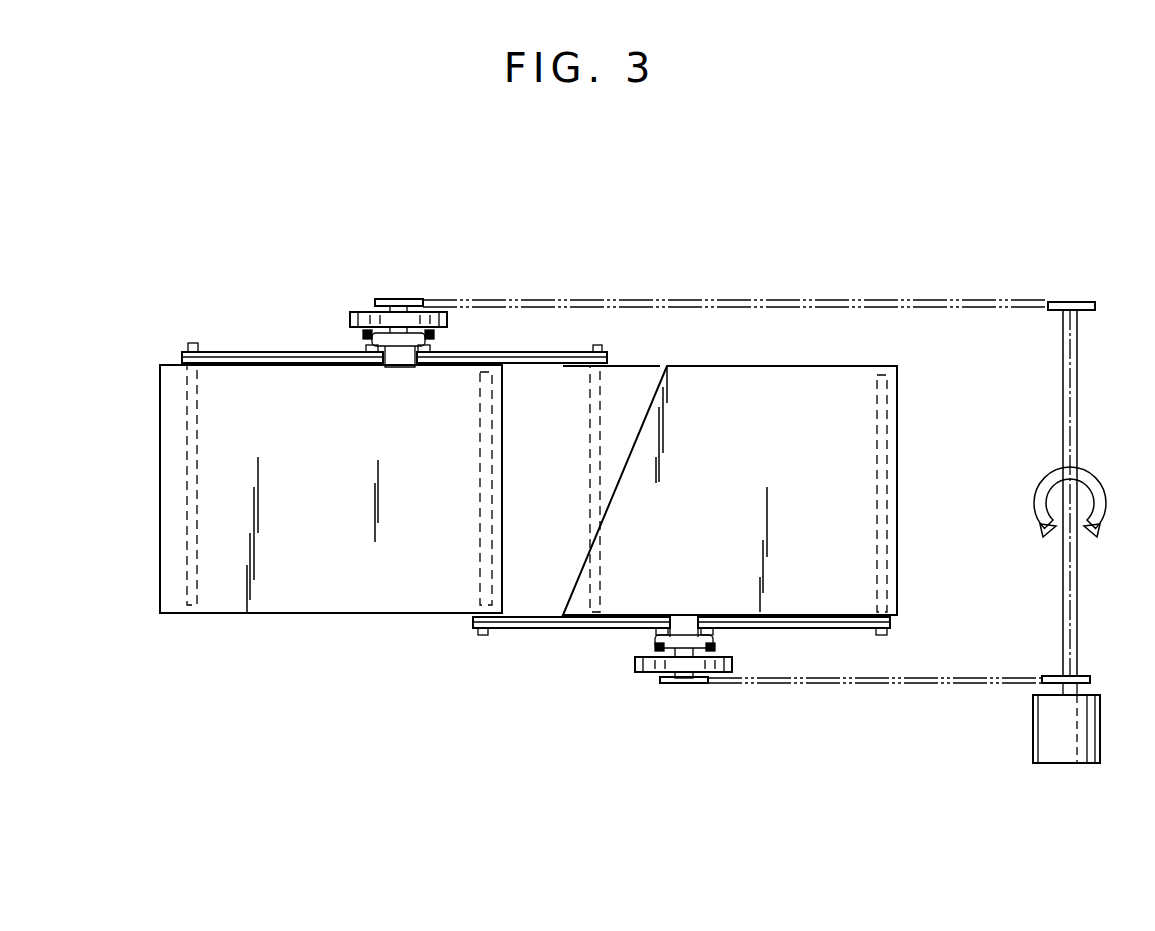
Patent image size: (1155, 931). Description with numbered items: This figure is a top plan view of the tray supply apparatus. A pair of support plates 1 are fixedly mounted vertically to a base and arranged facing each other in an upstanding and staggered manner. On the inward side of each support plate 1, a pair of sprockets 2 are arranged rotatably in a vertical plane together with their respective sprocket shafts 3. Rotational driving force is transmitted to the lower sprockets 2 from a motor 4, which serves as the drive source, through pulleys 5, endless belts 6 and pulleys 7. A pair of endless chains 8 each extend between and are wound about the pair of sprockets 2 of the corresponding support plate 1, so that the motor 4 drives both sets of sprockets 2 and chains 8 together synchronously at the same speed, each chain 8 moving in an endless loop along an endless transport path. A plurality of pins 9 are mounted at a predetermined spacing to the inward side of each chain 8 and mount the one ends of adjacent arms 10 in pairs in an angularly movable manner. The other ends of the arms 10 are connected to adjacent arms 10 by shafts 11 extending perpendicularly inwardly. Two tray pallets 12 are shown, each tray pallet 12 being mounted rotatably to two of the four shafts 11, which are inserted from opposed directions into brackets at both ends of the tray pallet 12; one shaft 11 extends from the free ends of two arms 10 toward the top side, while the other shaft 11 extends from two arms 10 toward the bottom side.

The support plate 1 is at (357, 311).
The sprocket 2 is at (400, 362).
The sprocket shaft 3 is at (397, 306).
The motor 4 is at (1082, 750).
The pulley 5 is at (1060, 302).
The endless belt 6 is at (655, 300).
The pulley 7 is at (416, 299).
The endless chain 8 is at (362, 330).
The pin 9 is at (366, 348).
The arm 10 is at (244, 352).
The shaft 11 is at (187, 553).
The tray pallet 12 is at (748, 372).